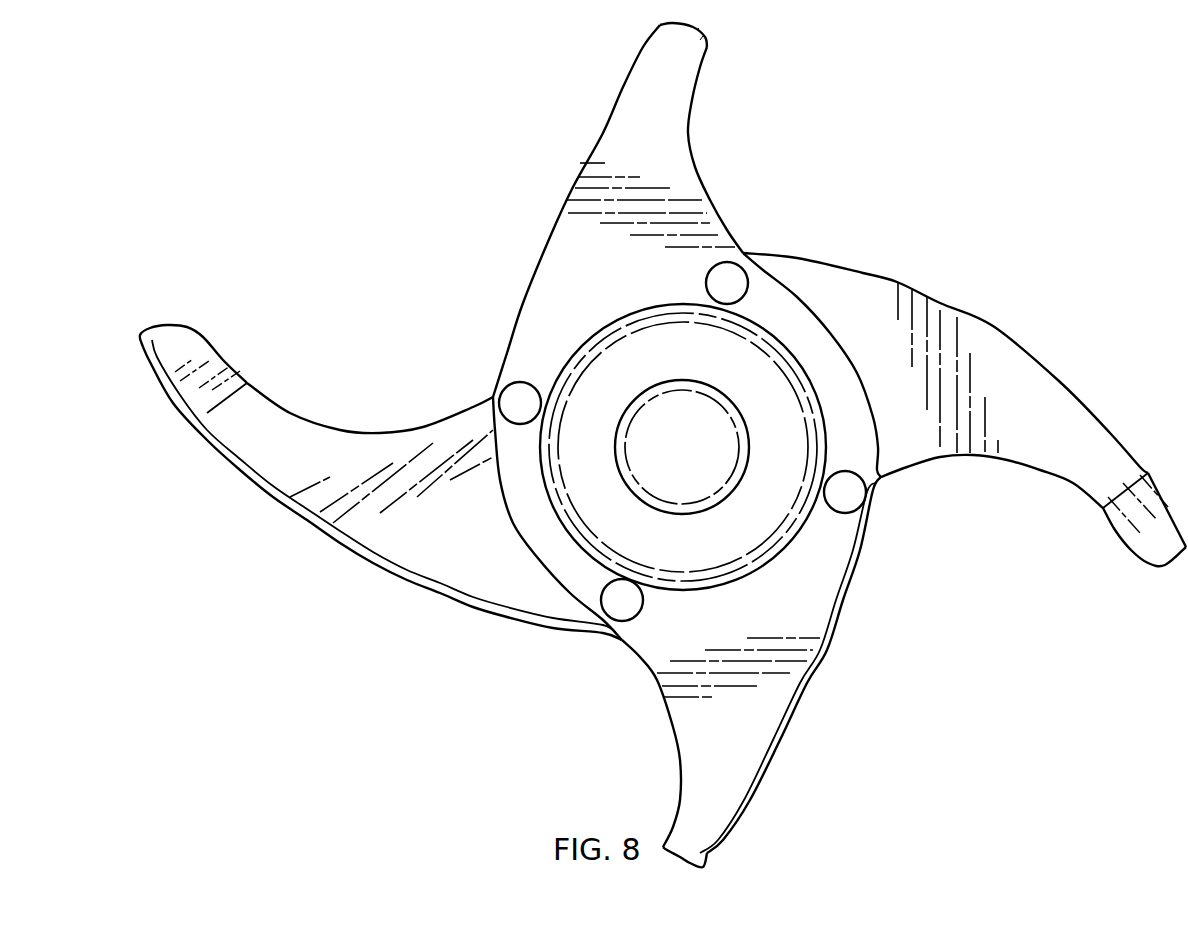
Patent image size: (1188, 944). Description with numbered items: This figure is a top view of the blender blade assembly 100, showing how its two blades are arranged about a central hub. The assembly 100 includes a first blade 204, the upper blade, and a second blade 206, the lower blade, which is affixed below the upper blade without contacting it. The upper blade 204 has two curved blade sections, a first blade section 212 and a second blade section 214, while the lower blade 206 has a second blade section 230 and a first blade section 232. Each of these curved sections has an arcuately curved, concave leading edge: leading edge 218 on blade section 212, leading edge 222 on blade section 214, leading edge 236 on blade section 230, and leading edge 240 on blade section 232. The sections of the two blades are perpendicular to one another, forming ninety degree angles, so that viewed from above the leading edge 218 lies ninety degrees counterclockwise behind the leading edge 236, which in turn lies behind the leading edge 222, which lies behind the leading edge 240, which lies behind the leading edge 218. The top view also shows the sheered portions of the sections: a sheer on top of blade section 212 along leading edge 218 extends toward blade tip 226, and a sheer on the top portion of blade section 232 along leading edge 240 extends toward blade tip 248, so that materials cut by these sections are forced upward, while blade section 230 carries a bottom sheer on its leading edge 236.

The blender blade assembly 100 is at (829, 148).
The first blade 204 is at (520, 337).
The second blade 206 is at (553, 613).
The first blade section 212 is at (743, 757).
The second blade section 214 is at (612, 142).
The leading edge 218 is at (806, 687).
The leading edge 222 is at (644, 46).
The blade tip 226 is at (718, 858).
The second blade section 230 is at (1013, 445).
The first blade section 232 is at (440, 567).
The leading edge 236 is at (993, 326).
The leading edge 240 is at (345, 548).
The blade tip 248 is at (175, 335).